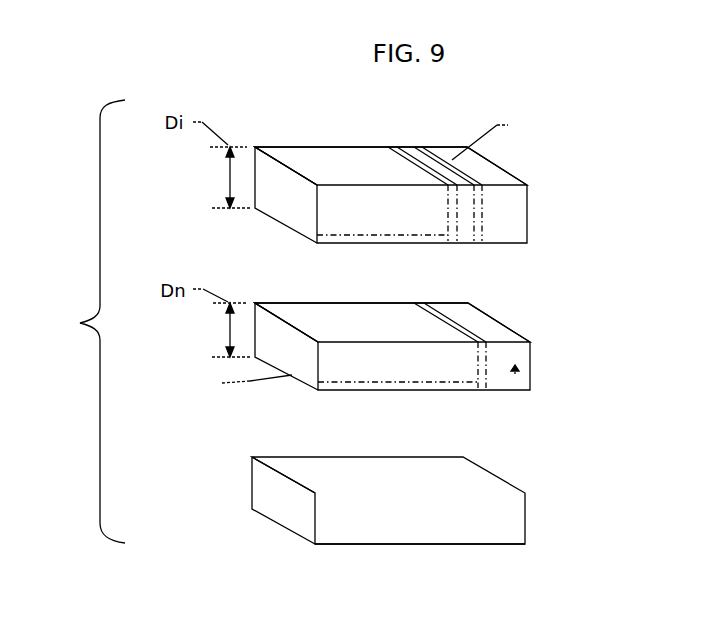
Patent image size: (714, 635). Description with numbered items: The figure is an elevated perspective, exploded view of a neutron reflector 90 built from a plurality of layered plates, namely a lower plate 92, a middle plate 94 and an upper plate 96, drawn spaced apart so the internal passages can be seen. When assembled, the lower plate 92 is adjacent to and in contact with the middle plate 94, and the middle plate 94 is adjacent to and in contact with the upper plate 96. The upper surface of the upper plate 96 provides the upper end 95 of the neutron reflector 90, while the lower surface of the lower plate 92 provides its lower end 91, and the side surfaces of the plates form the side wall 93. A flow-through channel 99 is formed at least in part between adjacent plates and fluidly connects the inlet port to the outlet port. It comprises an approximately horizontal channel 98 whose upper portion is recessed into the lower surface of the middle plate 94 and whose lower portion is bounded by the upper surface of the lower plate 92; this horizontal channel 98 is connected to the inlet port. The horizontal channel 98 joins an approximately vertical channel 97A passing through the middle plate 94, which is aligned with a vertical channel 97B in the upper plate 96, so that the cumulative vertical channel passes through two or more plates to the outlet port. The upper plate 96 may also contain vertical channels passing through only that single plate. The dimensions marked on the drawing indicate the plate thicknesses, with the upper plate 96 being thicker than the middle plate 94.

The neutron reflector 90 is at (82, 321).
The lower end 91 is at (457, 553).
The lower plate 92 is at (530, 522).
The side wall 93 is at (288, 340).
The middle plate 94 is at (394, 340).
The upper end 95 is at (362, 162).
The upper plate 96 is at (443, 177).
The vertical channel 97A is at (475, 348).
The vertical channel 97B is at (490, 202).
The horizontal channel 98 is at (395, 376).
The flow-through channel 99 is at (518, 371).